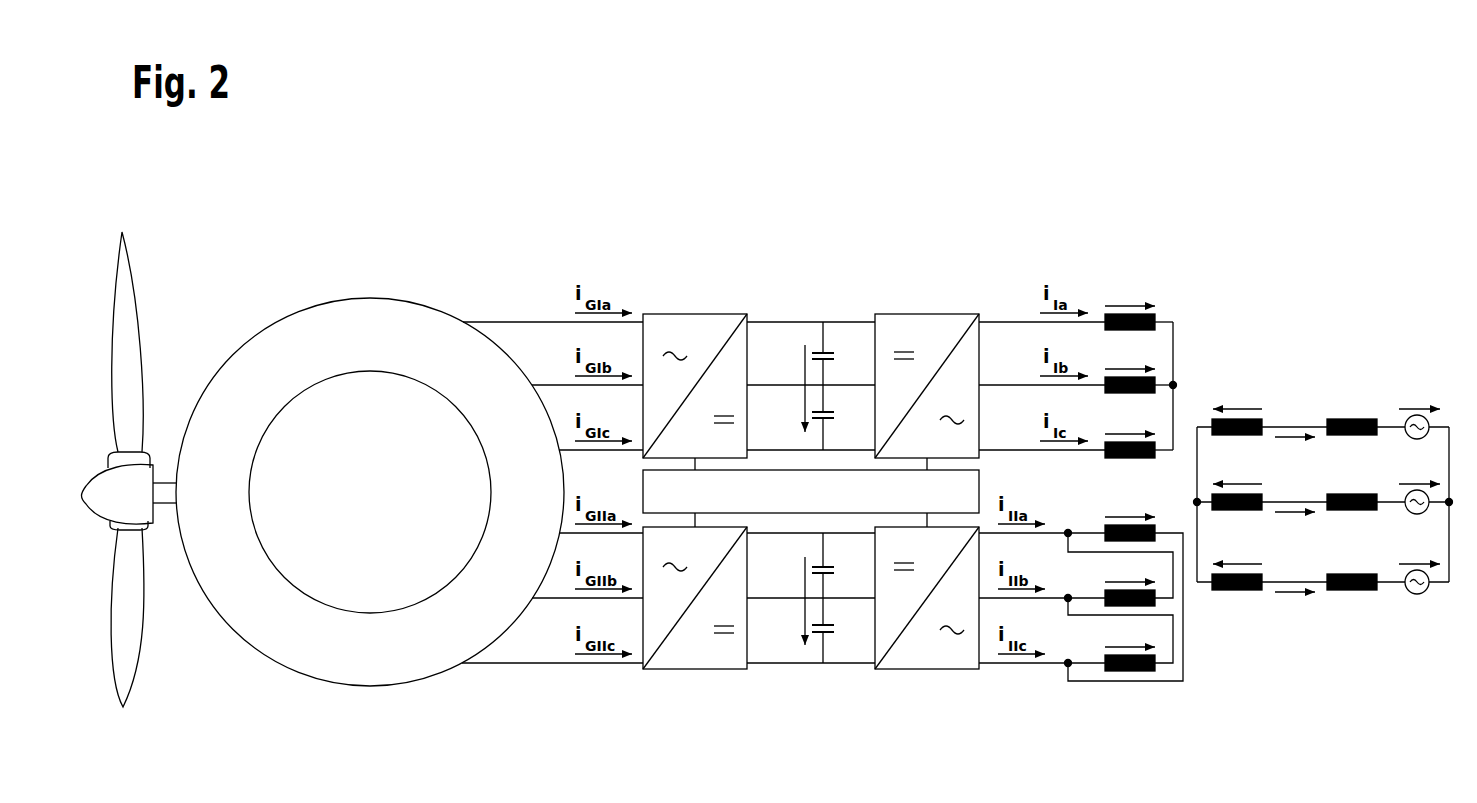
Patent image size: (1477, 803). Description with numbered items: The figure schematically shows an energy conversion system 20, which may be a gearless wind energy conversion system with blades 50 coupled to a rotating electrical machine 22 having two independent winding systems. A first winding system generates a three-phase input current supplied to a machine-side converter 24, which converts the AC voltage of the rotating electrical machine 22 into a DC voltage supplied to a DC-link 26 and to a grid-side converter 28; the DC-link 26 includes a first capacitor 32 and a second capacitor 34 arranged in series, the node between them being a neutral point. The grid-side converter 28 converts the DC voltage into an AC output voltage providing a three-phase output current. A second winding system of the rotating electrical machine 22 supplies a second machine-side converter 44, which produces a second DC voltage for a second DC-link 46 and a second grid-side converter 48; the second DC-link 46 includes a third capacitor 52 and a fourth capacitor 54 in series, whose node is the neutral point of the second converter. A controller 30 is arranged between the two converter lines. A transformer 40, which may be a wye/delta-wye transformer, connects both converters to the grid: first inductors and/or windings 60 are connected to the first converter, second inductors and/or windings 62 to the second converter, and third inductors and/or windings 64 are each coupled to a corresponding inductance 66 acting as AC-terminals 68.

The energy conversion system 20 is at (811, 476).
The rotating electrical machine 22 is at (370, 298).
The machine-side converter 24 is at (677, 314).
The DC-link 26 is at (821, 339).
The grid-side converter 28 is at (907, 314).
The controller 30 is at (796, 505).
The first capacitor 32 is at (815, 352).
The second capacitor 34 is at (830, 412).
The transformer 40 is at (1324, 448).
The second machine-side converter 44 is at (676, 669).
The second DC-link 46 is at (822, 652).
The second grid-side converter 48 is at (907, 669).
The blades 50 is at (135, 246).
The third capacitor 52 is at (831, 576).
The fourth capacitor 54 is at (815, 638).
The first inductors and/or windings 60 is at (1166, 310).
The second inductors and/or windings 62 is at (1150, 694).
The third inductors and/or windings 64 is at (1265, 378).
The inductance 66 is at (1369, 604).
The AC-terminals 68 is at (1441, 378).